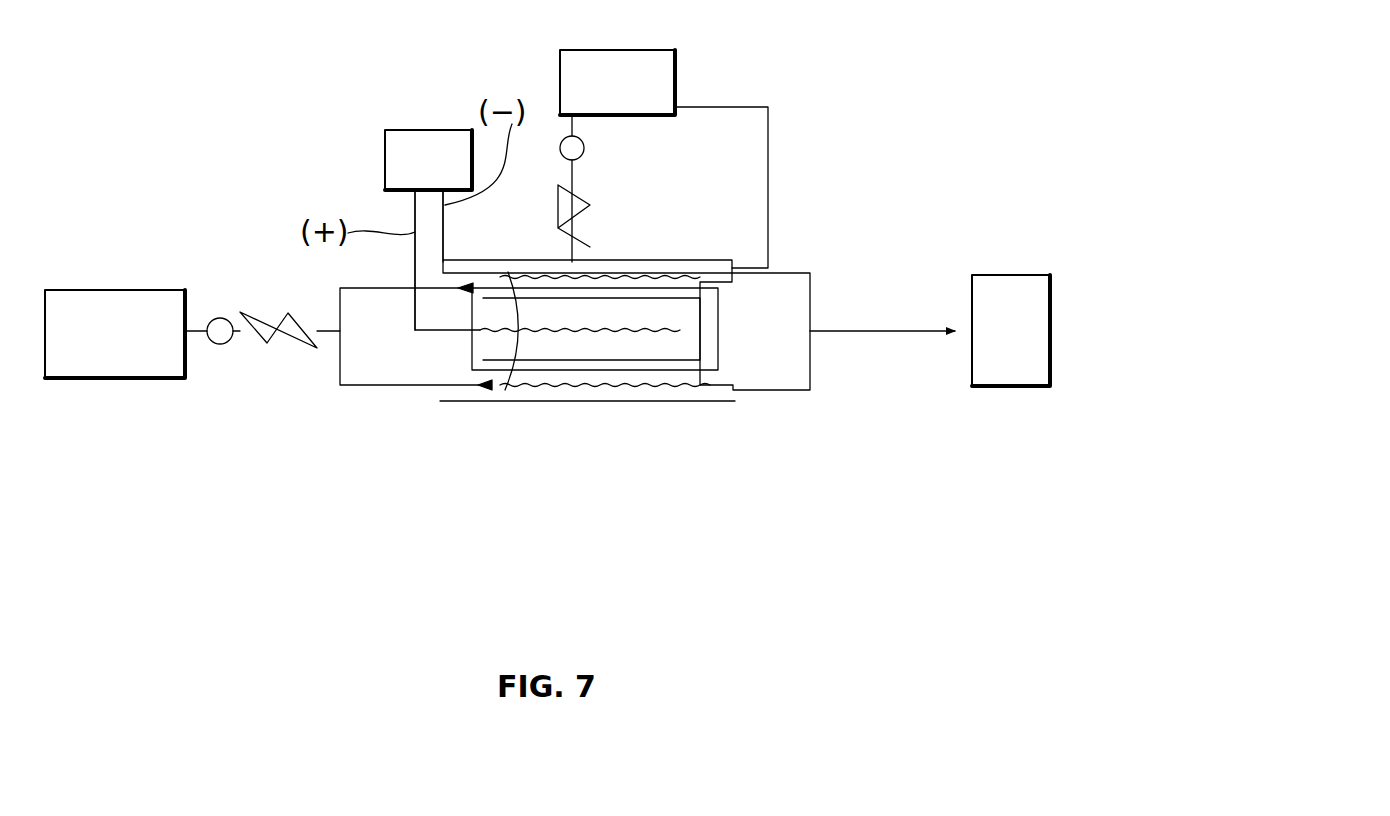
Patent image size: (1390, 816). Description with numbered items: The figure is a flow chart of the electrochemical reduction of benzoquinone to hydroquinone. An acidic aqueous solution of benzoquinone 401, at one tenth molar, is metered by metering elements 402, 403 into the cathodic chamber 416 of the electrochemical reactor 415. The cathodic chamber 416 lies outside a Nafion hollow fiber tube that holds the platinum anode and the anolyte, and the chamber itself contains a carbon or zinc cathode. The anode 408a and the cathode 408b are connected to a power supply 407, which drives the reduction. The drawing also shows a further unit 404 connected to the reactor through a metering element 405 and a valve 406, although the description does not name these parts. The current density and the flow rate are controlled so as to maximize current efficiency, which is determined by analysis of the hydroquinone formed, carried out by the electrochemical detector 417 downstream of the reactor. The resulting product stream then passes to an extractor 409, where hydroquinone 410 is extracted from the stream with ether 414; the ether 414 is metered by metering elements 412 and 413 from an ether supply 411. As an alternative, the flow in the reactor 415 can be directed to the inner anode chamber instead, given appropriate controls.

The acidic aqueous solution of benzoquinone 401 is at (140, 348).
The metering element 402 is at (220, 345).
The metering element 403 is at (298, 352).
The power supply 404 is at (675, 85).
The meter 405 is at (584, 156).
The valve 406 is at (590, 209).
The power supply 407 is at (430, 130).
The anode 408a is at (415, 215).
The cathode 408b is at (445, 240).
The extractor 409 is at (1254, 422).
The hydroquinone 410 is at (1300, 342).
The ether supply 411 is at (927, 662).
The metering element 412 is at (1094, 548).
The metering element 413 is at (1190, 573).
The ether 414 is at (1290, 522).
The electrochemical reactor 415 is at (490, 403).
The cathodic chamber 416 is at (590, 388).
The electrochemical detector 417 is at (1102, 458).